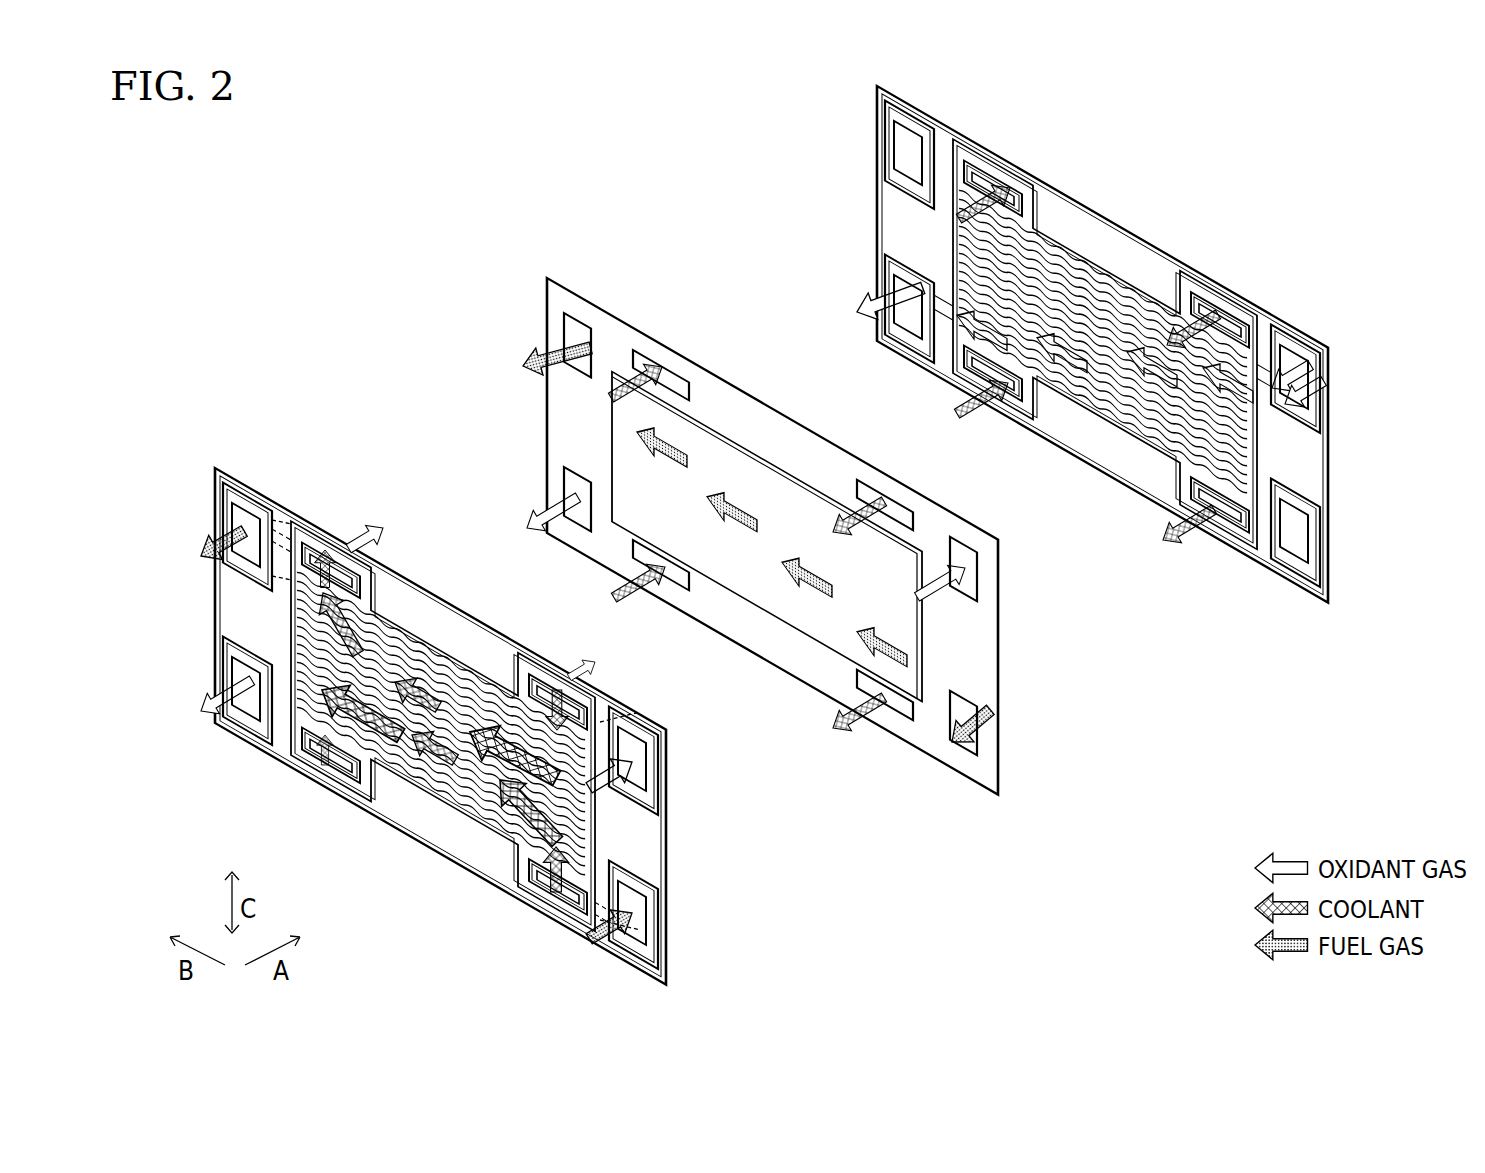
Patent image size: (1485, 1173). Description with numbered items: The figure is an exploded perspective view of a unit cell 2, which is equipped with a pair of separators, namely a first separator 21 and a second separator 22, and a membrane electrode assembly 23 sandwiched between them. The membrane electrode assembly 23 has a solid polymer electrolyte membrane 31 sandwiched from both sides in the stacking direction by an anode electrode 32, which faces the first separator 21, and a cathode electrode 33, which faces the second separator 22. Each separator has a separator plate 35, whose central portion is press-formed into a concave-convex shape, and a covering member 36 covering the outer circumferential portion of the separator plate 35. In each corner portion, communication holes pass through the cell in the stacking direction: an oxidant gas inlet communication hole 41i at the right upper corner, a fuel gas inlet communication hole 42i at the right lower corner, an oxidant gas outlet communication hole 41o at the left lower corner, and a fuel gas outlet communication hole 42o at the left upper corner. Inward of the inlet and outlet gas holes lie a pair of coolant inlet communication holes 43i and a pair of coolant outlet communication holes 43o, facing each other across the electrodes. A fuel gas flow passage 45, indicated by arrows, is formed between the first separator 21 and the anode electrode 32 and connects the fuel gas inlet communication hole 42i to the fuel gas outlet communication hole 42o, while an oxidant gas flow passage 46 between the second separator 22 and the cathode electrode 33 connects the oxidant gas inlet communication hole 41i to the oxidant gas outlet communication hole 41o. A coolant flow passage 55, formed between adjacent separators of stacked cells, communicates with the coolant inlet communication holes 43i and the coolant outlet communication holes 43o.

The unit cell 2 is at (659, 195).
The first separator 21 is at (680, 864).
The second separator 22 is at (1127, 212).
The membrane electrode assembly 23 is at (563, 272).
The solid polymer electrolyte membrane 31 is at (772, 478).
The anode electrode 32 is at (725, 450).
The cathode electrode 33 is at (767, 537).
The separator plate 35 is at (440, 645).
The covering member 36 is at (405, 580).
The oxidant gas outlet communication hole 41o is at (232, 665).
The oxidant gas inlet communication hole 41i is at (645, 775).
The fuel gas outlet communication hole 42o is at (240, 515).
The fuel gas inlet communication hole 42i is at (640, 918).
The coolant outlet communication hole 43o is at (312, 545).
The coolant inlet communication hole 43i is at (540, 690).
The fuel gas flow passage 45 is at (580, 716).
The oxidant gas flow passage 46 is at (1145, 335).
The coolant flow passage 55 is at (440, 752).